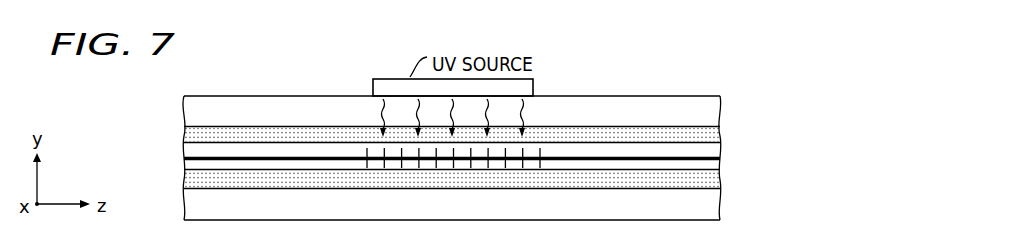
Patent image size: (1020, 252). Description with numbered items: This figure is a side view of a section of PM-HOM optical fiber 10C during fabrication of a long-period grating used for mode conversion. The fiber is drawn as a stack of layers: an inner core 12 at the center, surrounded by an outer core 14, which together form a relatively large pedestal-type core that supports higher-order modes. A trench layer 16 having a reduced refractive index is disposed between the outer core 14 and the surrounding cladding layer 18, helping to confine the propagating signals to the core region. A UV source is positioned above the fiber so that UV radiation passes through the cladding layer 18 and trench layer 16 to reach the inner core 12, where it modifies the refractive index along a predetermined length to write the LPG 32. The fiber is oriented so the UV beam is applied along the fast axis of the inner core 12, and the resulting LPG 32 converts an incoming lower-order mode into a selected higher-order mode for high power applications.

The PM-HOM optical fiber 10C is at (166, 108).
The cladding layer 18 is at (720, 109).
The trench layer 16 is at (710, 137).
The long-period grating (input mode converter) 32 is at (453, 162).
The outer core 14 is at (615, 165).
The inner core 12 is at (692, 160).